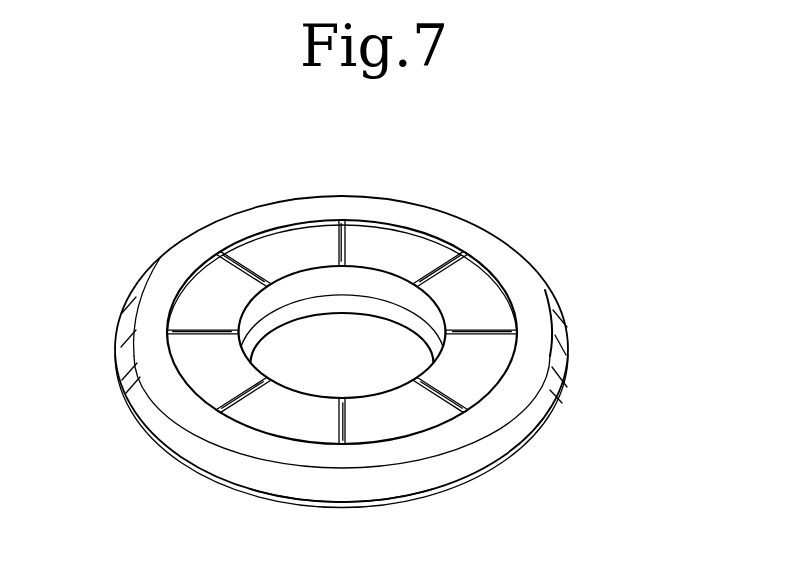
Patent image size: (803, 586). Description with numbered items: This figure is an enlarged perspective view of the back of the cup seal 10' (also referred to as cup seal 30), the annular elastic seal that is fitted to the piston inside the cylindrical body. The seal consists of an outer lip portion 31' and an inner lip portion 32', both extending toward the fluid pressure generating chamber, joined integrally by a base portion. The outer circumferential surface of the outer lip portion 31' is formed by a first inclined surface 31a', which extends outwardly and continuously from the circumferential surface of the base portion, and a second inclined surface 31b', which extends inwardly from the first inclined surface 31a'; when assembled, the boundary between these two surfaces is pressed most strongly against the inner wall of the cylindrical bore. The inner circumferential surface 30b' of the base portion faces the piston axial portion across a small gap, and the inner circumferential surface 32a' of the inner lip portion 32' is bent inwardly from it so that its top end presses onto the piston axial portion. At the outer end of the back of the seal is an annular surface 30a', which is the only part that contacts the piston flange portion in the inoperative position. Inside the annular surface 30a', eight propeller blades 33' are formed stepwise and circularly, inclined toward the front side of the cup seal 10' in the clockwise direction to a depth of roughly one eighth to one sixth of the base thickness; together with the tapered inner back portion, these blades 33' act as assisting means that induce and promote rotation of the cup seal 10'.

The cup seal 10' is at (375, 329).
The cup seal 30 is at (540, 281).
The annular surface 30a' is at (432, 384).
The inner circumferential surface of the base portion 30b' is at (344, 245).
The outer lip portion 31' is at (365, 387).
The first inclined surface 31a' is at (382, 431).
The second inclined surface 31b' is at (341, 534).
The inner lip portion 32' is at (260, 274).
The inner circumferential surface of the inner lip portion 32a' is at (256, 304).
The propeller blades 33' is at (367, 341).